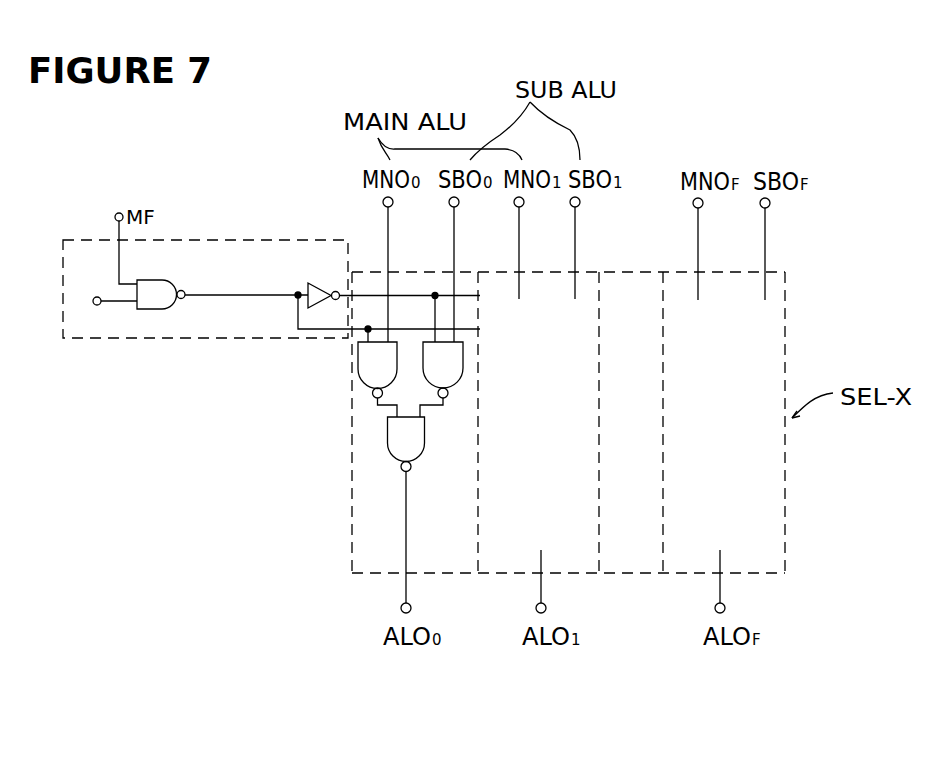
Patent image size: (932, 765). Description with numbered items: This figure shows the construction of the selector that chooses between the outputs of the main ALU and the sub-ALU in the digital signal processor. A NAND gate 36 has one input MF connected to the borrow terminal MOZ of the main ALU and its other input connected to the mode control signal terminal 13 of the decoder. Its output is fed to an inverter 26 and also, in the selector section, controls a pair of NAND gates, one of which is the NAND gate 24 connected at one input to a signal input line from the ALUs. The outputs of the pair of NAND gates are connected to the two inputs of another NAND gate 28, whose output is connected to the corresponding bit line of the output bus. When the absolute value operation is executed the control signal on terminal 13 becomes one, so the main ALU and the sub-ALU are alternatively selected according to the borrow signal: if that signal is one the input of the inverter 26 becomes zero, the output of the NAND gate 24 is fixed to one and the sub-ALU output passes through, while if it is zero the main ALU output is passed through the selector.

The mode control signal terminal IS13 13 is at (107, 315).
The NAND gate 24 is at (368, 367).
The inverter 26 is at (322, 281).
The NAND gate 28 is at (397, 443).
The NAND gate 36 is at (158, 304).